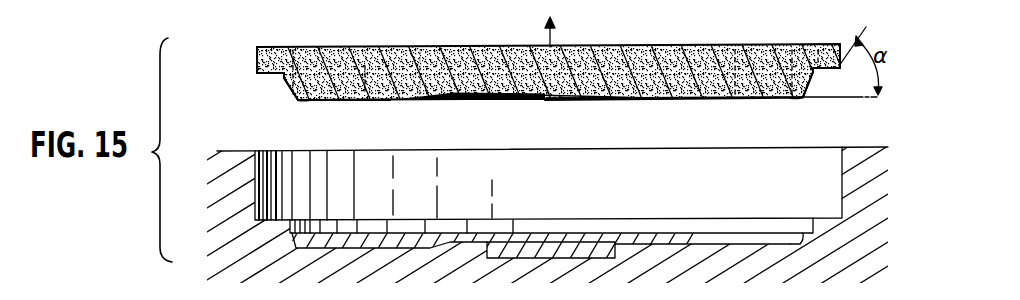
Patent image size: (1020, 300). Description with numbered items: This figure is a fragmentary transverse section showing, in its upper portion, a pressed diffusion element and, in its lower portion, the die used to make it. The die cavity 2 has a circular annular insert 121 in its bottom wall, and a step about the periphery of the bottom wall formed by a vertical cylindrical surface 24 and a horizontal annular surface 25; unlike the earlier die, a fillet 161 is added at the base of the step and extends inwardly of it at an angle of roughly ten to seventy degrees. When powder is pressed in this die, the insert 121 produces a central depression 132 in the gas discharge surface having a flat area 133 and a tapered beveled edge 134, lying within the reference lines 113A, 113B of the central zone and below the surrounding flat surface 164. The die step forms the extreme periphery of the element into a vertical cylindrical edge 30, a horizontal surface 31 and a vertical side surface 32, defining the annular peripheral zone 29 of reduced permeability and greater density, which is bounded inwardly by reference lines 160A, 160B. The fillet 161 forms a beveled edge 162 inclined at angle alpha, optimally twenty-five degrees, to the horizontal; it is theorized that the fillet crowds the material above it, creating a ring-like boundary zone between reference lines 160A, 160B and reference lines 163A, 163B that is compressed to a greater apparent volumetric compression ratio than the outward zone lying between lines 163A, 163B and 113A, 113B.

The die cavity 2 is at (802, 183).
The vertical cylindrical surface 24 is at (814, 234).
The horizontal annular surface 25 is at (833, 221).
The annular peripheral zone 29 is at (259, 41).
The vertical cylindrical edge 30 is at (257, 60).
The horizontal surface 31 is at (260, 75).
The vertical side surface 32 is at (288, 85).
The reference line 113A is at (378, 44).
The reference line 113B is at (728, 42).
The annular insert 121 is at (527, 250).
The central depression 132 is at (537, 101).
The flat area 133 is at (517, 103).
The beveled edge 134 is at (672, 104).
The reference line 160A is at (293, 44).
The reference line 160B is at (818, 36).
The fillet 161 is at (808, 240).
The beveled edge 162 is at (300, 97).
The reference line 163A is at (315, 45).
The reference line 163B is at (782, 42).
The flat surface 164 is at (333, 101).